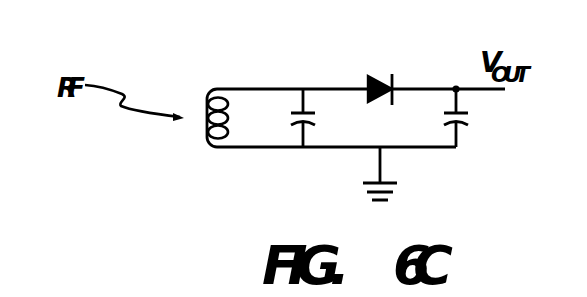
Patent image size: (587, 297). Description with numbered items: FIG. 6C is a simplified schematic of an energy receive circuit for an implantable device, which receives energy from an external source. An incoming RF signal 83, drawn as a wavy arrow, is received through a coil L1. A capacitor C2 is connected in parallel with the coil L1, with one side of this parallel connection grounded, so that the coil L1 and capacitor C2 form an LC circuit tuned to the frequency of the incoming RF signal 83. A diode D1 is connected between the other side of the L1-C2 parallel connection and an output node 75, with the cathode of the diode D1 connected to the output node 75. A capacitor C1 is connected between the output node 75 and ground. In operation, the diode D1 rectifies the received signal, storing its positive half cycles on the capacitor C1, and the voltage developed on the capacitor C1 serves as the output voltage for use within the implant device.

The incoming RF signal 83 is at (127, 97).
The output node 75 is at (456, 89).
The coil L1 is at (232, 118).
The capacitor C2 is at (319, 118).
The diode D1 is at (380, 75).
The capacitor C1 is at (472, 118).